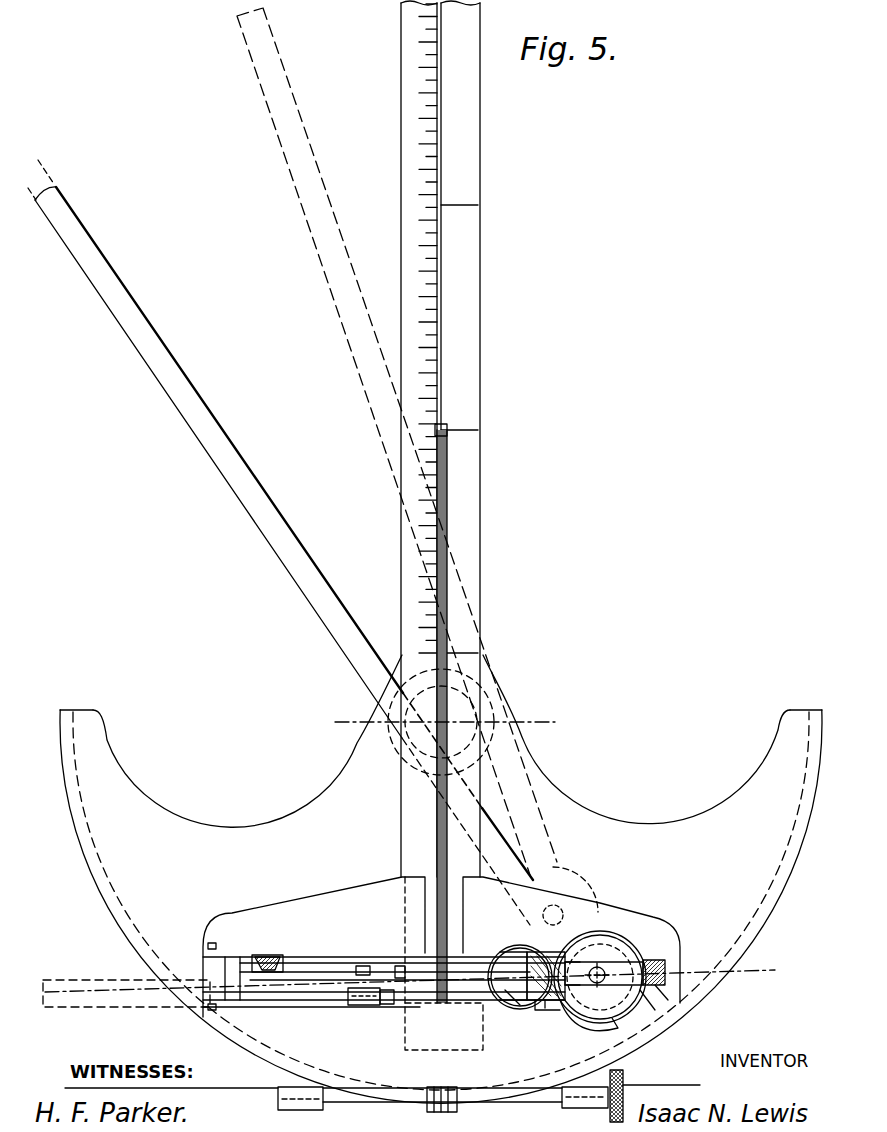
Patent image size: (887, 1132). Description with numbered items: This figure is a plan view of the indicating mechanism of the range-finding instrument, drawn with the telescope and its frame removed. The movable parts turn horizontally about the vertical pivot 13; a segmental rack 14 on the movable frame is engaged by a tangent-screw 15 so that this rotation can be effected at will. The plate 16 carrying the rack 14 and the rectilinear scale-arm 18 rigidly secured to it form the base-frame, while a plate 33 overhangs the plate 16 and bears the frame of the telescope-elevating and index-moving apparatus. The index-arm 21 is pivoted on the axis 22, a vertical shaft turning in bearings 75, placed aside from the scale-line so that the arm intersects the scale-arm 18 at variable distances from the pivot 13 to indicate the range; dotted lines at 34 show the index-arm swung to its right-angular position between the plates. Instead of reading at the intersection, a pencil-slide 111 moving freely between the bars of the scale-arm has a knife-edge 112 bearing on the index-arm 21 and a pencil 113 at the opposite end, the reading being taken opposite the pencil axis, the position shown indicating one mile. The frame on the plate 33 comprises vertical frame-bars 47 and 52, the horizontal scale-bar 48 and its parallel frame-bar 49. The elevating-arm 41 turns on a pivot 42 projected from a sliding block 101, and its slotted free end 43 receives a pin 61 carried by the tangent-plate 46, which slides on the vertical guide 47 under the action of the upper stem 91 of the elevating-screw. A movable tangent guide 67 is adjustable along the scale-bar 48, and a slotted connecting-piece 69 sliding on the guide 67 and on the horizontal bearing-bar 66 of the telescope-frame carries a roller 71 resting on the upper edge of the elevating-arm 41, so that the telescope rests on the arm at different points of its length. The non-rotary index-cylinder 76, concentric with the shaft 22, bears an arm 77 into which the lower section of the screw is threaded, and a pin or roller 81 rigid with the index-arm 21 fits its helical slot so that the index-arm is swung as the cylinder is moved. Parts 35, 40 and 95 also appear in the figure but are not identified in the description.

The vertical pivot 13 is at (444, 720).
The segmental rack 14 is at (102, 908).
The tangent-screw 15 is at (452, 1105).
The plate 16 is at (441, 759).
The scale-arm 18 is at (440, 439).
The index-arm 21 is at (292, 466).
The axis 22 is at (620, 965).
The plate 33 is at (441, 963).
The right-angular position of index-arm 34 is at (103, 980).
The bearing 35 is at (512, 952).
The collar 40 is at (576, 960).
The elevating-arm 41 is at (364, 966).
The pivot 42 is at (280, 957).
The free end of elevating-arm 43 is at (540, 962).
The tangent-plate 46 is at (541, 952).
The vertical frame-bar 47 is at (600, 955).
The horizontal scale-bar 48 is at (340, 995).
The parallel frame-bar 49 is at (350, 957).
The vertical frame-bar 52 is at (207, 972).
The pin 61 is at (548, 958).
The horizontal bearing-bar 66 is at (505, 962).
The movable tangent guide 67 is at (360, 1005).
The slotted connecting-piece 69 is at (398, 1000).
The roller 71 is at (402, 964).
The bearings 75 is at (640, 992).
The index-cylinder 76 is at (656, 986).
The arm 77 is at (583, 1012).
The pin or roller 81 is at (614, 1003).
The upper screw-threaded stem 91 is at (520, 992).
The screw 95 is at (550, 1000).
The sliding block 101 is at (266, 957).
The pencil-slide 111 is at (455, 482).
The knife-edge 112 is at (441, 748).
The pencil 113 is at (435, 430).